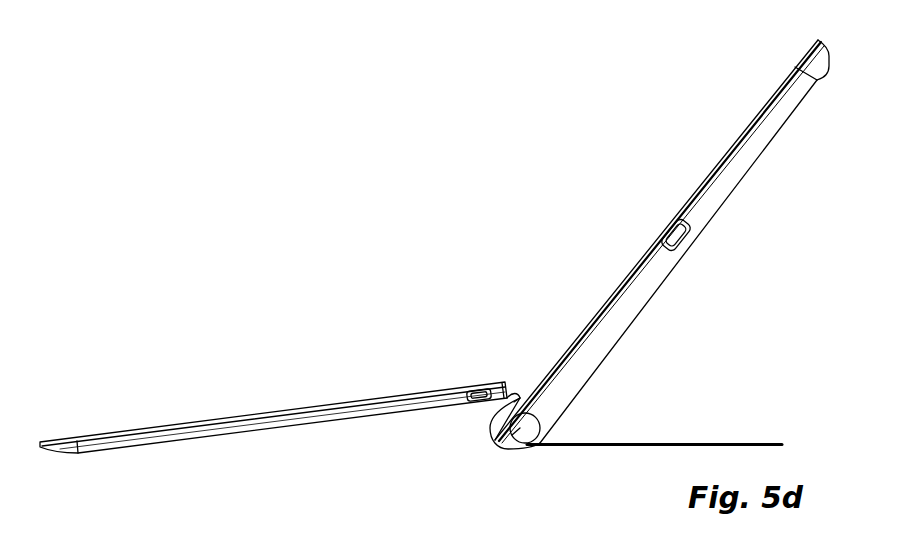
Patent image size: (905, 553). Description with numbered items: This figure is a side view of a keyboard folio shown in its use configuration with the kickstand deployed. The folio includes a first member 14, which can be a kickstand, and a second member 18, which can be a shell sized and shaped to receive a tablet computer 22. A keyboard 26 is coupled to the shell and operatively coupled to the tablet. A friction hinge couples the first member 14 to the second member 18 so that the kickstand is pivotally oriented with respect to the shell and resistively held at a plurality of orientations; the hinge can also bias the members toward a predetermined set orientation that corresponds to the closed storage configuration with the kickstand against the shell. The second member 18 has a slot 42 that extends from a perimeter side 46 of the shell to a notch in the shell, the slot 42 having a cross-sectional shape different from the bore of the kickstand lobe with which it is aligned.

The first member 14 is at (712, 443).
The second member 18 is at (770, 142).
The tablet computer 22 is at (713, 162).
The keyboard 26 is at (262, 412).
The slot 42 is at (503, 445).
The perimeter side 46 is at (547, 408).